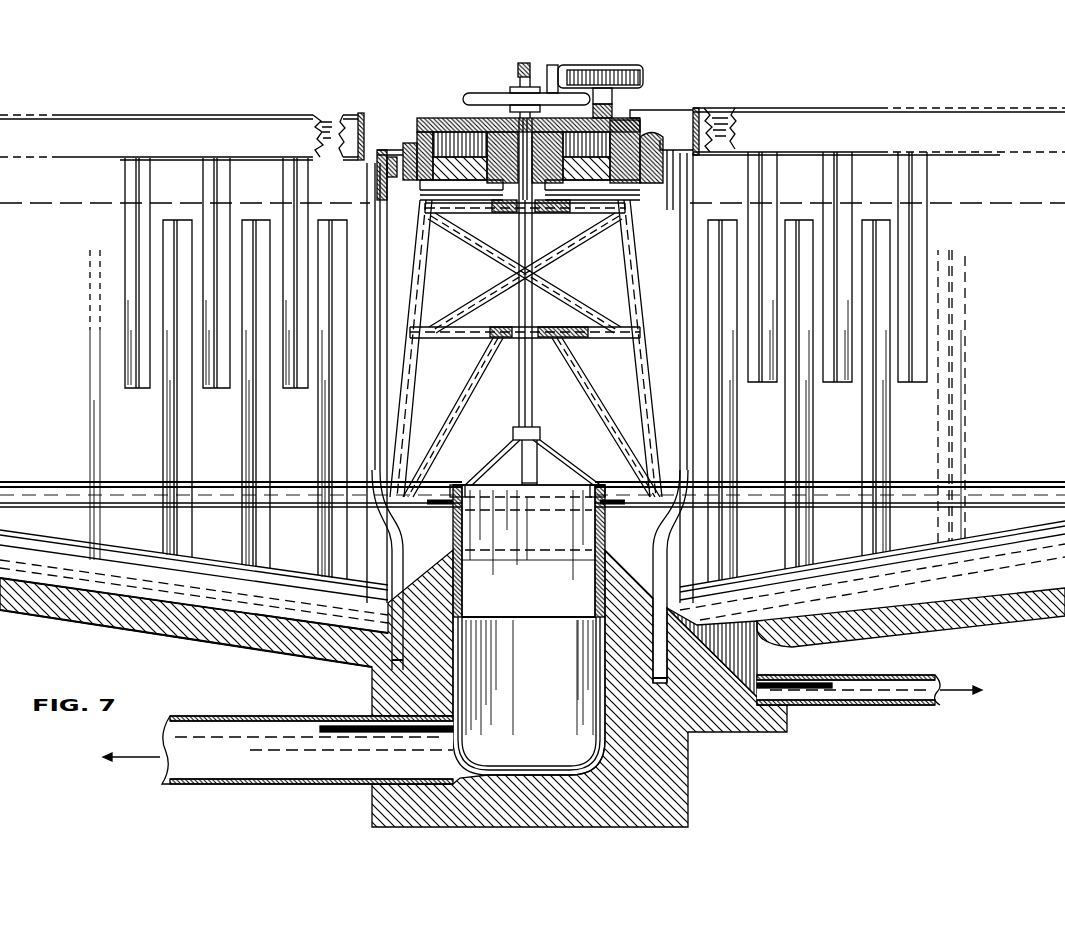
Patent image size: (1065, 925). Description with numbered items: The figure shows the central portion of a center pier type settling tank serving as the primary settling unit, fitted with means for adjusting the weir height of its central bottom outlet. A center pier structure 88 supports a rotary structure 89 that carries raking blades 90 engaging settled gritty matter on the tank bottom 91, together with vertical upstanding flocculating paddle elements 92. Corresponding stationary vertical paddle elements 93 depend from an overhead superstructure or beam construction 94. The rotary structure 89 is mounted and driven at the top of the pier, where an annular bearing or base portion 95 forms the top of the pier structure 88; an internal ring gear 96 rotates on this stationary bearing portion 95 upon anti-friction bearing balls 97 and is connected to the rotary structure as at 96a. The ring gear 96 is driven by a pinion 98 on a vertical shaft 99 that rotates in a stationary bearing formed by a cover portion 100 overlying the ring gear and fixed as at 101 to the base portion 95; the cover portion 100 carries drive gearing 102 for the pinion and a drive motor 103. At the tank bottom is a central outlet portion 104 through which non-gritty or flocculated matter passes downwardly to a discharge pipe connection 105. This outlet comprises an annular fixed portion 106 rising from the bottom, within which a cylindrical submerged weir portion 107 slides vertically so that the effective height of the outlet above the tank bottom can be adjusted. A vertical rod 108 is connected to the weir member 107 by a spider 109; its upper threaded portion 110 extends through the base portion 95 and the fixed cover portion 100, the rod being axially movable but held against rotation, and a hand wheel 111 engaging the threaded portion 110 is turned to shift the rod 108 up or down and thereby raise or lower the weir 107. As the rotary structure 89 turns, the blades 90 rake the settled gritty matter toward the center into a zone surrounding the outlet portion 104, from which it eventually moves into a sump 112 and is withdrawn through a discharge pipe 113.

The center pier structure 88 is at (407, 291).
The rotary structure 89 is at (357, 470).
The raking blades 90 is at (183, 602).
The tank bottom 91 is at (311, 659).
The flocculating paddle elements 92 is at (242, 442).
The stationary vertical paddle elements 93 is at (282, 203).
The superstructure or beam construction 94 is at (250, 113).
The annular bearing or base portion 95 is at (412, 196).
The internal ring gear 96 is at (400, 150).
The connection of ring gear to rotary structure 96a is at (380, 170).
The anti-friction bearing balls 97 is at (661, 130).
The pinion 98 is at (625, 109).
The vertical shaft 99 is at (612, 98).
The cover portion 100 is at (633, 121).
The fixing of cover portion to base portion 101 is at (477, 114).
The drive gearing 102 is at (643, 71).
The drive motor 103 is at (547, 72).
The central outlet portion 104 is at (643, 534).
The discharge pipe connection 105 is at (278, 750).
The annular fixed portion 106 is at (443, 560).
The cylindrical submerged weir portion 107 is at (463, 569).
The vertical rod 108 is at (533, 385).
The spider 109 is at (495, 448).
The upper threaded portion 110 is at (518, 68).
The hand wheel 111 is at (463, 97).
The sump 112 is at (712, 652).
The discharge pipe 113 is at (813, 694).